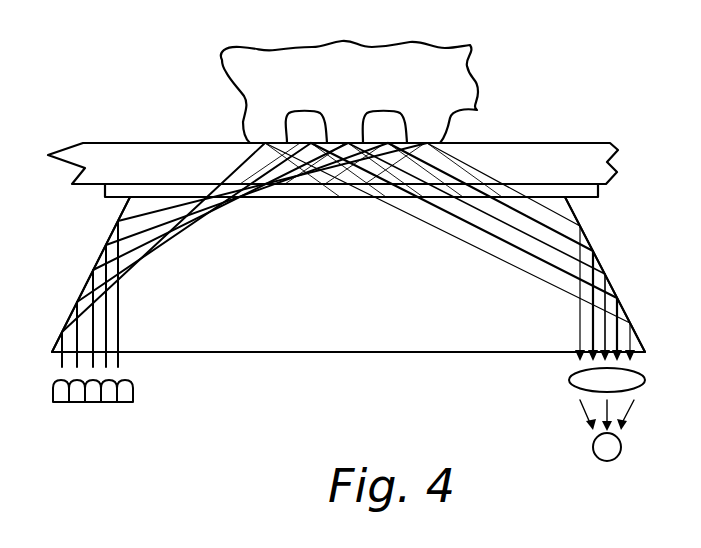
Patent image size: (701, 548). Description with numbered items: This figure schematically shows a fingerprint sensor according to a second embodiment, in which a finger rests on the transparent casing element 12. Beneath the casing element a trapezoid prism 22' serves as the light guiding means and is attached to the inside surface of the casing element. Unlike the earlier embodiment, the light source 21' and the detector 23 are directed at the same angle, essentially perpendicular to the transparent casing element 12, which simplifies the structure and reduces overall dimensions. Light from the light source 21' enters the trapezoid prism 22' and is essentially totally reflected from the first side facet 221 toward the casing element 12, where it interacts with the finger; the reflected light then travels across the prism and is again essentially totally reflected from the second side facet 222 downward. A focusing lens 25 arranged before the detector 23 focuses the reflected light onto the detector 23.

The transparent casing element 12 is at (537, 155).
The light source 21' is at (93, 419).
The trapezoid prism 22' is at (348, 297).
The side facet 221 is at (96, 260).
The side facet 222 is at (598, 257).
The focusing lens 25 is at (583, 380).
The detector 23 is at (600, 449).